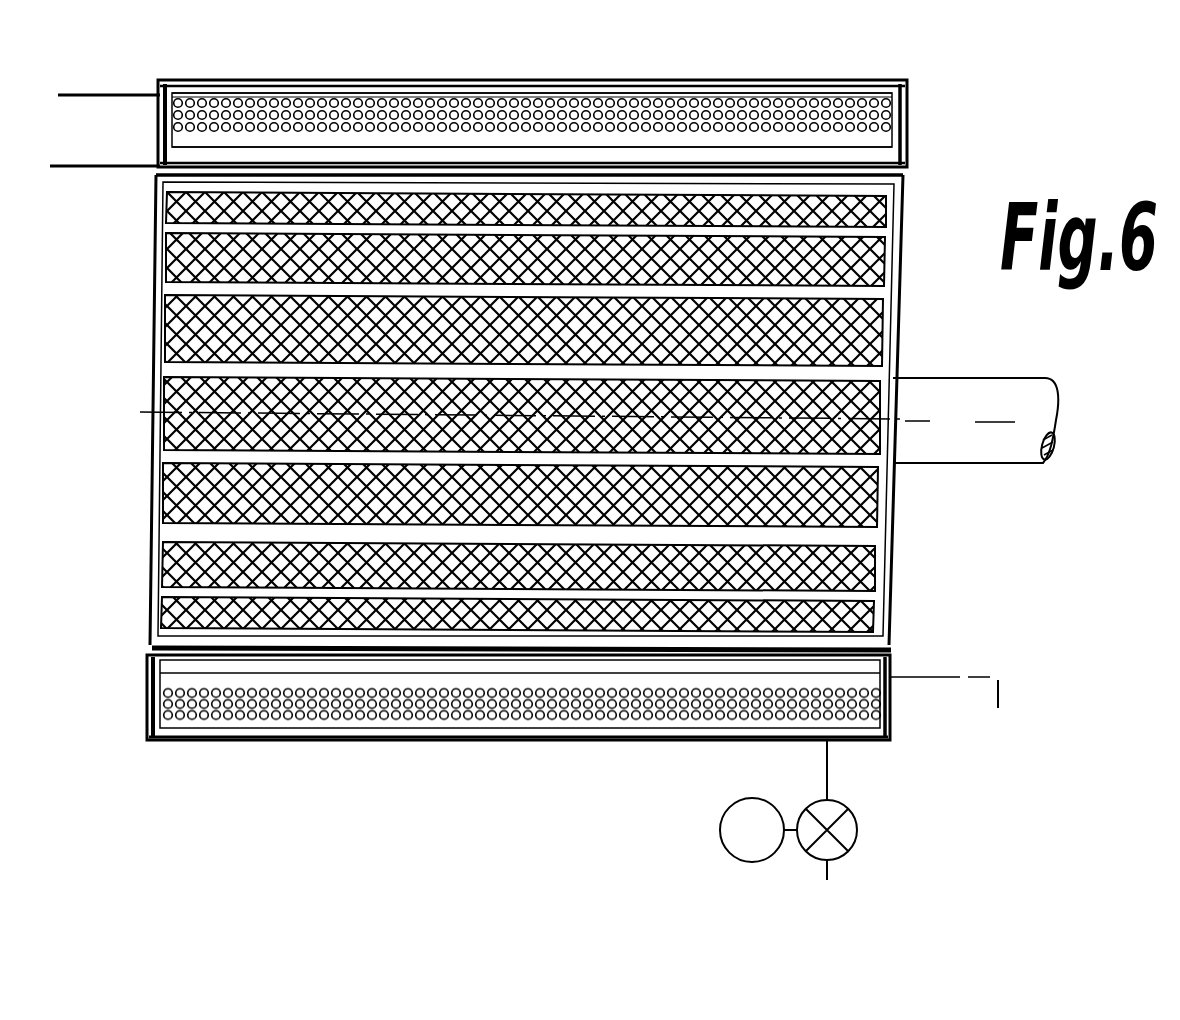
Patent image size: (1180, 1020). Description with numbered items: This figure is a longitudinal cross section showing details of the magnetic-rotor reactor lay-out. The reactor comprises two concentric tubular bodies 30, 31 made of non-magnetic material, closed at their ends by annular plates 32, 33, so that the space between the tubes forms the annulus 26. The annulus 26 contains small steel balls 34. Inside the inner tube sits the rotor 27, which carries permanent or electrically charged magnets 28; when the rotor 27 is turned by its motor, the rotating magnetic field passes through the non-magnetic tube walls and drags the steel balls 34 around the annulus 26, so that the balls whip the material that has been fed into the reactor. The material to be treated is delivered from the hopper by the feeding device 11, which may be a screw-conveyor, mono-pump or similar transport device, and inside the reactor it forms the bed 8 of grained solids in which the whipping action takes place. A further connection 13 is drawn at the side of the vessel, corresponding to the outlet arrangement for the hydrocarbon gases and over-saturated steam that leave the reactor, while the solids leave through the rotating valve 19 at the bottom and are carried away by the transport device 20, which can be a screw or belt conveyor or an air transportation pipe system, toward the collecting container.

The bed 8 is at (497, 140).
The feeding device 11 is at (100, 94).
The outlet line 13 is at (1000, 690).
The rotating valve 19 is at (857, 818).
The transport device 20 is at (827, 778).
The annulus 26 is at (595, 118).
The rotor 27 is at (900, 223).
The magnets 28 is at (877, 263).
The tubular body 30 is at (765, 72).
The tubular body 31 is at (873, 168).
The annular plate 32 is at (157, 119).
The annular plate 33 is at (907, 110).
The steel balls 34 is at (670, 102).